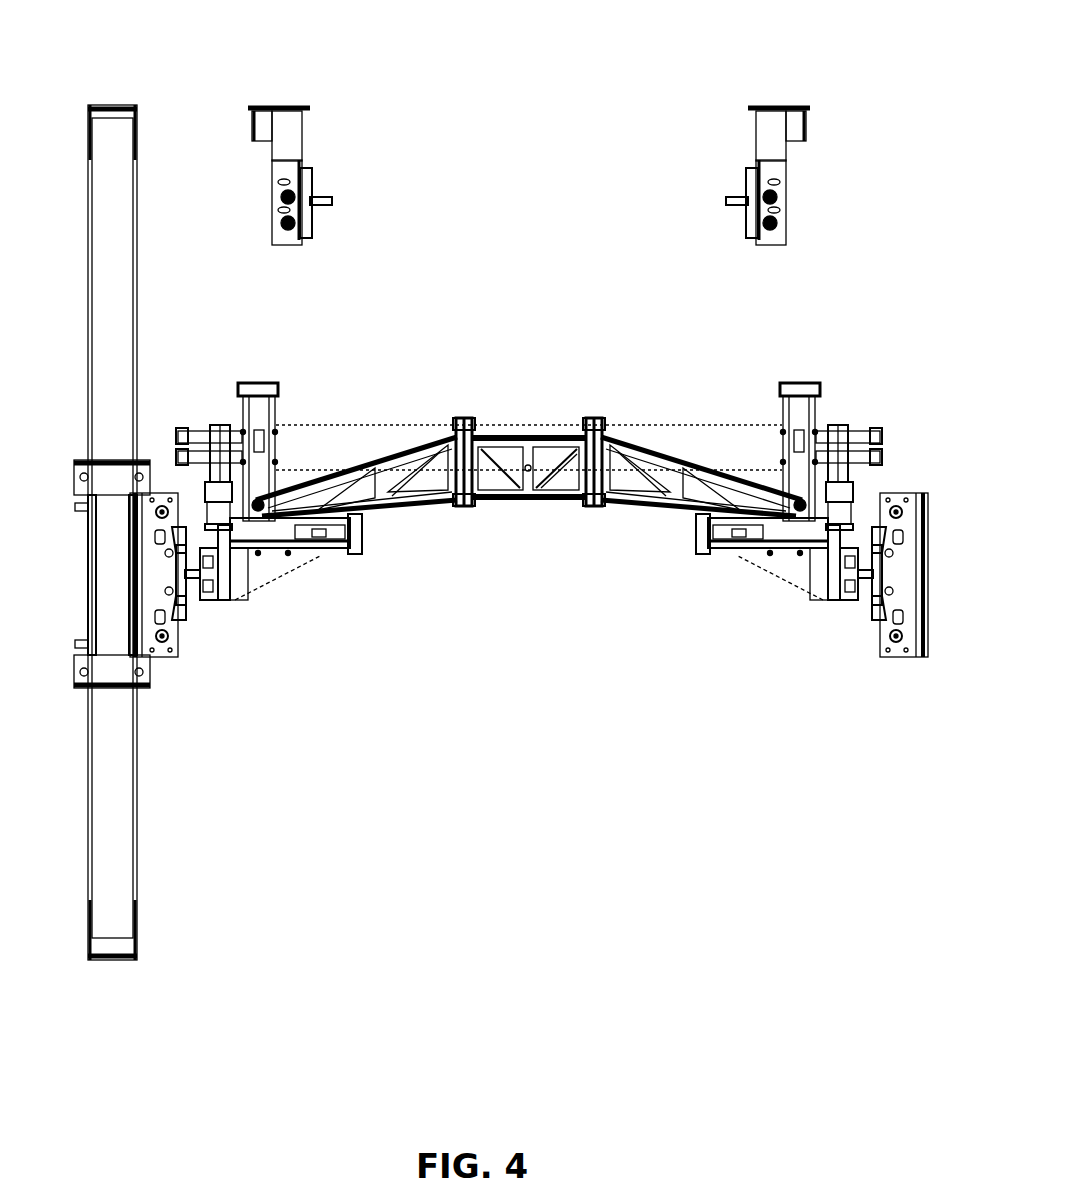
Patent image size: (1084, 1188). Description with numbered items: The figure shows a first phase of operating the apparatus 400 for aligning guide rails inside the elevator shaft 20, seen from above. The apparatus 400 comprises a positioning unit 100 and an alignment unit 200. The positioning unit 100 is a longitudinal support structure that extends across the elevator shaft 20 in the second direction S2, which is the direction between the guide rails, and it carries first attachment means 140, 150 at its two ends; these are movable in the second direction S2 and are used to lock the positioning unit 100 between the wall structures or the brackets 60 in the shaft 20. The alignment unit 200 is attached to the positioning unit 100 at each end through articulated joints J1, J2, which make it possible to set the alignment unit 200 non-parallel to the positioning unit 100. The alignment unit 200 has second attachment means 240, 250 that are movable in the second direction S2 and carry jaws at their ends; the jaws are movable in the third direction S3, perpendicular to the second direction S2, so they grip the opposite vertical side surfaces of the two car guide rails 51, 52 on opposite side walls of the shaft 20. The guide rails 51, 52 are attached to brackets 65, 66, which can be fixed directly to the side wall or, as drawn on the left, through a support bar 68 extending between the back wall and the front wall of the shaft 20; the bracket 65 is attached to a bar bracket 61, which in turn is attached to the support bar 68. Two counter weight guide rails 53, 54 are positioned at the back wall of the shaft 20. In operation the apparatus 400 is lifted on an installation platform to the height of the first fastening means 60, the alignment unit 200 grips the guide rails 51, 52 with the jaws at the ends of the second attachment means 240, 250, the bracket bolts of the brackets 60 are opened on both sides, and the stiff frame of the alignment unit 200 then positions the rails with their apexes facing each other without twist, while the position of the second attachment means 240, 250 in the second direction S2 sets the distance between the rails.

The apparatus for aligning guide rails 400 is at (619, 95).
The positioning unit 100 is at (536, 362).
The alignment unit 200 is at (536, 566).
The elevator shaft 20 is at (547, 878).
The counter weight guide rail 53 is at (331, 202).
The counter weight guide rail 54 is at (733, 200).
The first attachment means 150 is at (196, 445).
The first attachment means 140 is at (862, 440).
The articulated joint J2 is at (262, 502).
The articulated joint J1 is at (796, 502).
The second attachment means 250 is at (270, 573).
The second attachment means 240 is at (786, 571).
The car guide rail 51 is at (193, 575).
The car guide rail 52 is at (870, 593).
The bracket 65 is at (163, 653).
The bracket 66 is at (900, 655).
The bar bracket 61 is at (118, 678).
The brackets (first fastening means) 60 is at (219, 744).
The support bar 68 is at (122, 848).
The second direction S2 is at (527, 1000).
The third direction S3 is at (755, 947).